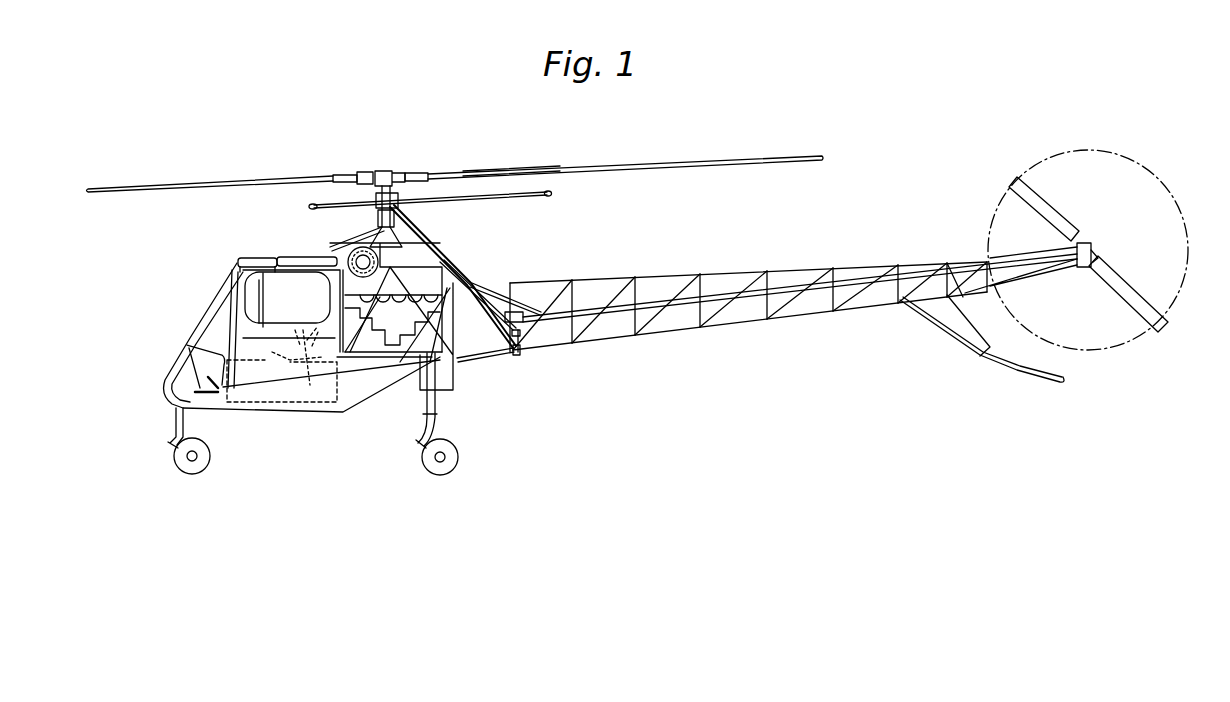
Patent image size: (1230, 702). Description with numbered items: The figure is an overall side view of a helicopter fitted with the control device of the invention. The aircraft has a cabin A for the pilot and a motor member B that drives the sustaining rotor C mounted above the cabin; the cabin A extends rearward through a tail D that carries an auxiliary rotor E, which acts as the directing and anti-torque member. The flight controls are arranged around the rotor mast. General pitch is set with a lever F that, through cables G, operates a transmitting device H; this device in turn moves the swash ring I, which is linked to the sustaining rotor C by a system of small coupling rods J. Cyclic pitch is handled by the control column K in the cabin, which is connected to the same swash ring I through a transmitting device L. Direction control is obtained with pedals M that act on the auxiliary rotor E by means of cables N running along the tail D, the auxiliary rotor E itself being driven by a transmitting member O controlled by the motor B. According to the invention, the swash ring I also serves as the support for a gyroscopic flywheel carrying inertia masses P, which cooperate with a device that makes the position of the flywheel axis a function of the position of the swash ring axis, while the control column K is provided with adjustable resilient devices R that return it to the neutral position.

The cabin A is at (217, 306).
The motor member B is at (407, 260).
The sustaining rotor C is at (413, 172).
The tail D is at (657, 280).
The auxiliary rotor E is at (1040, 196).
The lever F is at (281, 342).
The cables G is at (496, 288).
The transmitting device H is at (409, 209).
The swash ring I is at (406, 199).
The small coupling rods J is at (373, 191).
The control column K is at (262, 300).
The transmitting device L is at (340, 242).
The pedals M is at (210, 400).
The cables N is at (688, 308).
The transmitting member O is at (520, 300).
The inertia masses P is at (542, 196).
The adjustable resilient devices R is at (248, 257).